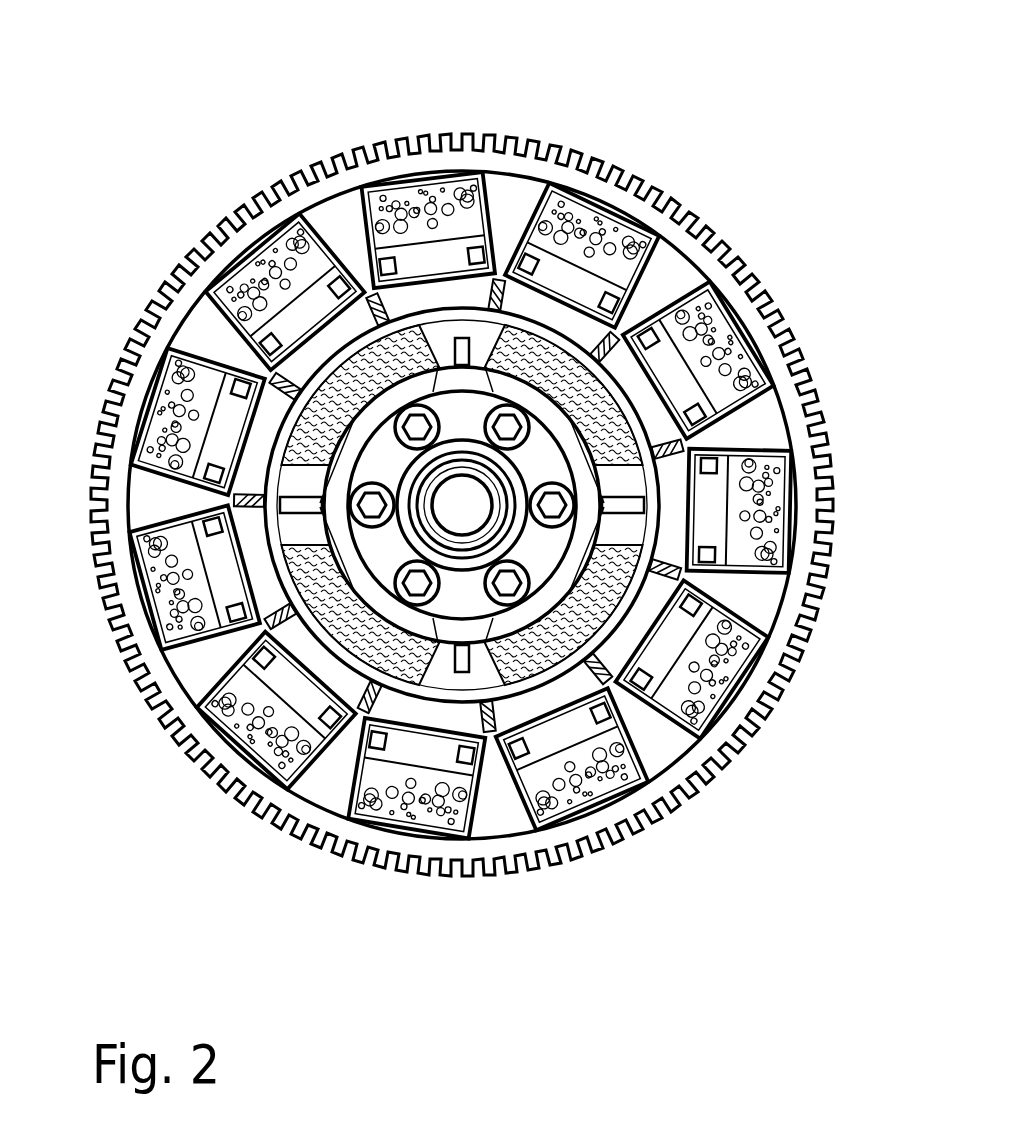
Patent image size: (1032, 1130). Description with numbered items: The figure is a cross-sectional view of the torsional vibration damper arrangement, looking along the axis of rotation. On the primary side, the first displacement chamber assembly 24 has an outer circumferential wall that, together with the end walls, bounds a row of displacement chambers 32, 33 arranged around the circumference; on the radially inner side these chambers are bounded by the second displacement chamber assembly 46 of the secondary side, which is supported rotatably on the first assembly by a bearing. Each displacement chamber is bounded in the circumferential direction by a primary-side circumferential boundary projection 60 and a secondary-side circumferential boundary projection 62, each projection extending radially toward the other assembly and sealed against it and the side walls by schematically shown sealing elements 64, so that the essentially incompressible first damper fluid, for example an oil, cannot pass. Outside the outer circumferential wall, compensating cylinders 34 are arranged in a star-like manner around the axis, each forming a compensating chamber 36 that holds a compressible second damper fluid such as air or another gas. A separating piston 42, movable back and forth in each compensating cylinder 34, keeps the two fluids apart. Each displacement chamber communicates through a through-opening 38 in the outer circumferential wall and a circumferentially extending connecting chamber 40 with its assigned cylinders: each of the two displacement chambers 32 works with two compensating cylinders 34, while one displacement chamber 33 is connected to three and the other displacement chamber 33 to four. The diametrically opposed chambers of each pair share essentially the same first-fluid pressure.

The first displacement chamber assembly 24 is at (357, 723).
The displacement chamber 32 is at (340, 383).
The displacement chamber 33 is at (613, 405).
The compensating cylinder 34 is at (605, 203).
The compensating chamber 36 is at (617, 240).
The through-opening 38 is at (402, 315).
The connecting chamber 40 is at (607, 347).
The separating piston 42 is at (450, 257).
The second displacement chamber assembly 46 is at (555, 597).
The primary-side circumferential boundary projection 60 is at (530, 690).
The secondary-side circumferential boundary projection 62 is at (313, 477).
The sealing element 64 is at (650, 513).